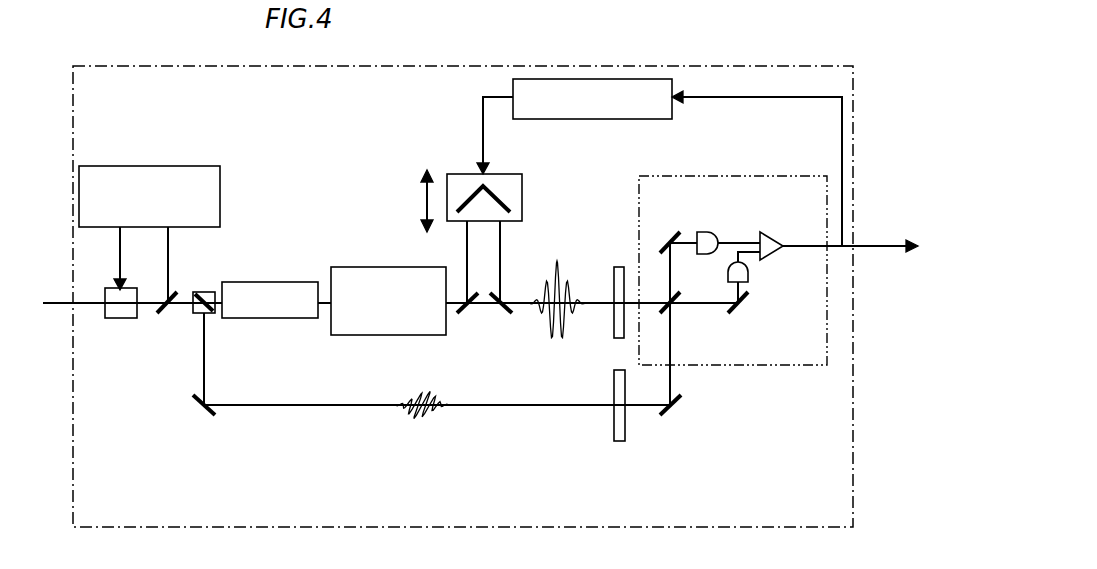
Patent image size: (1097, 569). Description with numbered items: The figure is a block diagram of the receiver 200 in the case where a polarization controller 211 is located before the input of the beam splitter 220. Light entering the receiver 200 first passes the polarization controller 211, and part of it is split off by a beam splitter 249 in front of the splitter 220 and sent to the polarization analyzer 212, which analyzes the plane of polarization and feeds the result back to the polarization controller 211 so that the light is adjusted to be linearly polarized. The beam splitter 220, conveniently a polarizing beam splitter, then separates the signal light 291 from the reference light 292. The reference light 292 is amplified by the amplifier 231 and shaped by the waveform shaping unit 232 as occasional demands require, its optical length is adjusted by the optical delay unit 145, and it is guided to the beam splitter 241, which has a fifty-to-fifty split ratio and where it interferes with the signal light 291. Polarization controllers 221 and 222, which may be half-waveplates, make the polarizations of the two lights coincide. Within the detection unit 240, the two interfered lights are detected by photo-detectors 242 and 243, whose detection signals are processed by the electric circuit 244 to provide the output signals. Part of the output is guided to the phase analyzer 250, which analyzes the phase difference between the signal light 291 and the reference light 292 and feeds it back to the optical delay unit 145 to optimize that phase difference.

The receiver 200 is at (333, 100).
The polarization controller 211 is at (133, 333).
The polarization analyzer 212 is at (149, 164).
The beam splitter 220 is at (219, 274).
The polarization controller 221 is at (615, 276).
The polarization controller 222 is at (642, 435).
The amplifier 231 is at (270, 262).
The waveform shaping unit 232 is at (388, 267).
The detection unit 240 is at (733, 239).
The beam splitter 241 is at (694, 326).
The photo-detector 242 is at (721, 219).
The photo-detector 243 is at (772, 286).
The electric circuit 244 is at (860, 224).
The beam splitter 249 is at (145, 270).
The phase analyzer 250 is at (659, 162).
The optical delay unit 145 is at (494, 186).
The signal light 291 is at (432, 436).
The reference light 292 is at (566, 260).